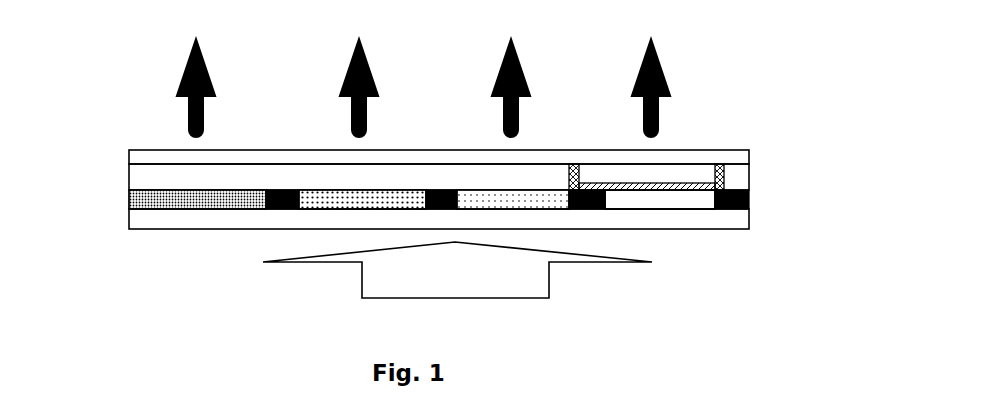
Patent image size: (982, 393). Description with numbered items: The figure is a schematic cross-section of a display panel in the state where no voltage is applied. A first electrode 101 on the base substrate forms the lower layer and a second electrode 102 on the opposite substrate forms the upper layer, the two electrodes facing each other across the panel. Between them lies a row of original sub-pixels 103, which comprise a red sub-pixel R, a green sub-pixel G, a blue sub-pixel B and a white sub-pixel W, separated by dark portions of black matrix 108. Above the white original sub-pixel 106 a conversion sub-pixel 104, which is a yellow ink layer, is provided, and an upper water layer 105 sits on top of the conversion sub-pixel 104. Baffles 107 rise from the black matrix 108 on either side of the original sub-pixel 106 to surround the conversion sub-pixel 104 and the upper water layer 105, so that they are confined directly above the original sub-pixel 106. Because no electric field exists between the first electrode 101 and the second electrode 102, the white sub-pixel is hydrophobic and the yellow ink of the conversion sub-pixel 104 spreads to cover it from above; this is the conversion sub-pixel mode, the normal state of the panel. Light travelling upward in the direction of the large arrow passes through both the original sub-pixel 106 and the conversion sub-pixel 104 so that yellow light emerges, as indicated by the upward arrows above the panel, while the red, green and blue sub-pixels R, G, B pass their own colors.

The first electrode 101 is at (147, 218).
The second electrode 102 is at (142, 157).
The original sub-pixels 103 is at (152, 200).
The conversion sub-pixel 104 is at (724, 187).
The upper water layer 105 is at (152, 177).
The original sub-pixel under the conversion sub-pixel 106 is at (686, 200).
The baffle 107 is at (574, 167).
The black matrix 108 is at (750, 203).
The red sub-pixel R is at (205, 203).
The green sub-pixel G is at (317, 201).
The blue sub-pixel B is at (523, 195).
The white sub-pixel W is at (695, 200).